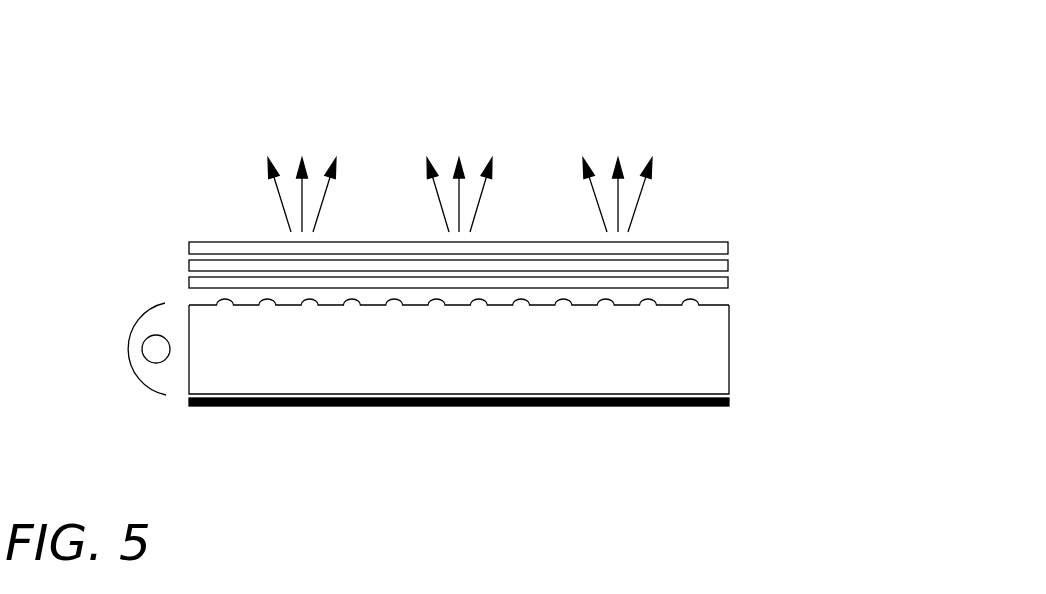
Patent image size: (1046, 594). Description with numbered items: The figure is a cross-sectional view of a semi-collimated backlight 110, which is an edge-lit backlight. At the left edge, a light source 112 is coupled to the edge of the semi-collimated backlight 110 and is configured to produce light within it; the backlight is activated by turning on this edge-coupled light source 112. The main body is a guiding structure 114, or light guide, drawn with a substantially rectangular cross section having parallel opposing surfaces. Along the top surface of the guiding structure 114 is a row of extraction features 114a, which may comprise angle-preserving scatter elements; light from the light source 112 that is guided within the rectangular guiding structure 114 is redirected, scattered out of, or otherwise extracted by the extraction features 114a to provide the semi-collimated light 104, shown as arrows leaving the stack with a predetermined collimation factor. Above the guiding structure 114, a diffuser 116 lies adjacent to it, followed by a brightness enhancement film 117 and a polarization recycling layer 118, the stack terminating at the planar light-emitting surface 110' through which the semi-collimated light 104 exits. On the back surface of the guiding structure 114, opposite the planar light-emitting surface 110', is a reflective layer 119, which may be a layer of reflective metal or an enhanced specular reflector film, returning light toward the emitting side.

The semi-collimated backlight 110 is at (484, 248).
The semi-collimated light 104 is at (662, 187).
The planar light-emitting surface 110' is at (462, 240).
The polarization recycling layer 118 is at (729, 247).
The brightness enhancement film 117 is at (189, 264).
The diffuser 116 is at (729, 282).
The guiding structure 114 is at (729, 355).
The extraction features 114a is at (548, 315).
The reflective layer 119 is at (729, 402).
The light source 112 is at (154, 407).